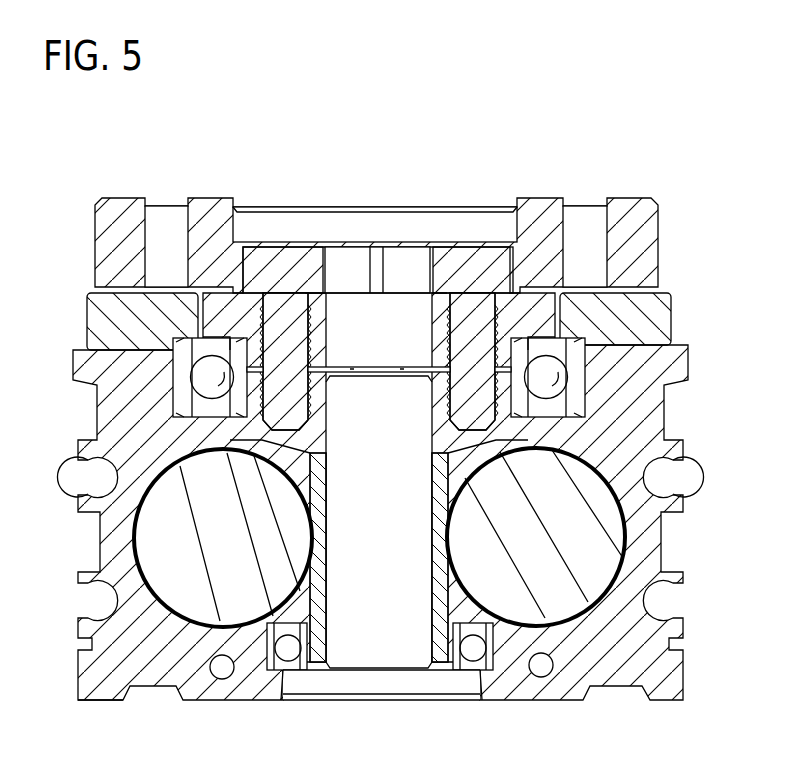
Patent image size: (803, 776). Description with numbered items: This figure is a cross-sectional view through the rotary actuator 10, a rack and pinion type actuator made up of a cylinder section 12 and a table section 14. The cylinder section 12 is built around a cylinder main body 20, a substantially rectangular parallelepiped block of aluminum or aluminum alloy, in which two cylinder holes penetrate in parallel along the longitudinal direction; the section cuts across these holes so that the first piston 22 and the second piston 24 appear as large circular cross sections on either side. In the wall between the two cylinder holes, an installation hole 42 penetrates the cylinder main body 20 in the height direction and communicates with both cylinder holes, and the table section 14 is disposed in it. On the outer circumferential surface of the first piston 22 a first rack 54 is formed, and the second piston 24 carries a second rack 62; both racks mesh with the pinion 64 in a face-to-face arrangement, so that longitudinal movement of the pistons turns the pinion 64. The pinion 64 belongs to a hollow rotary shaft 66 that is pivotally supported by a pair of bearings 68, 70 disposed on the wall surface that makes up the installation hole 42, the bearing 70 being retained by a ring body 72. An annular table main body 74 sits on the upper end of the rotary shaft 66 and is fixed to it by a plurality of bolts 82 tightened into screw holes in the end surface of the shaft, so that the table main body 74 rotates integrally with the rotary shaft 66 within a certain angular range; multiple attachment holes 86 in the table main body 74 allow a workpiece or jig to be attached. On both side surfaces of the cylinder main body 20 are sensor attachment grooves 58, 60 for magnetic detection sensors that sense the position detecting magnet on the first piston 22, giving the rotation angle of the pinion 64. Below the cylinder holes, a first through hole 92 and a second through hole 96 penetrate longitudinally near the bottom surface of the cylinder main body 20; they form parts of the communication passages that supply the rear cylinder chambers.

The rotary actuator 10 is at (241, 123).
The cylinder section 12 is at (693, 345).
The table section 14 is at (648, 178).
The cylinder main body 20 is at (677, 676).
The first piston 22 is at (160, 548).
The second piston 24 is at (600, 548).
The installation hole 42 is at (383, 680).
The first rack 54 is at (290, 530).
The sensor attachment groove 58 is at (95, 481).
The sensor attachment groove 60 is at (665, 474).
The second rack 62 is at (462, 534).
The pinion 64 is at (318, 575).
The rotary shaft 66 is at (318, 441).
The bearing 68 is at (289, 656).
The bearing 70 is at (210, 368).
The ring body 72 is at (105, 330).
The table main body 74 is at (102, 254).
The bolt 82 is at (281, 265).
The attachment hole 86 is at (165, 245).
The first through hole 92 is at (222, 680).
The second through hole 96 is at (541, 678).